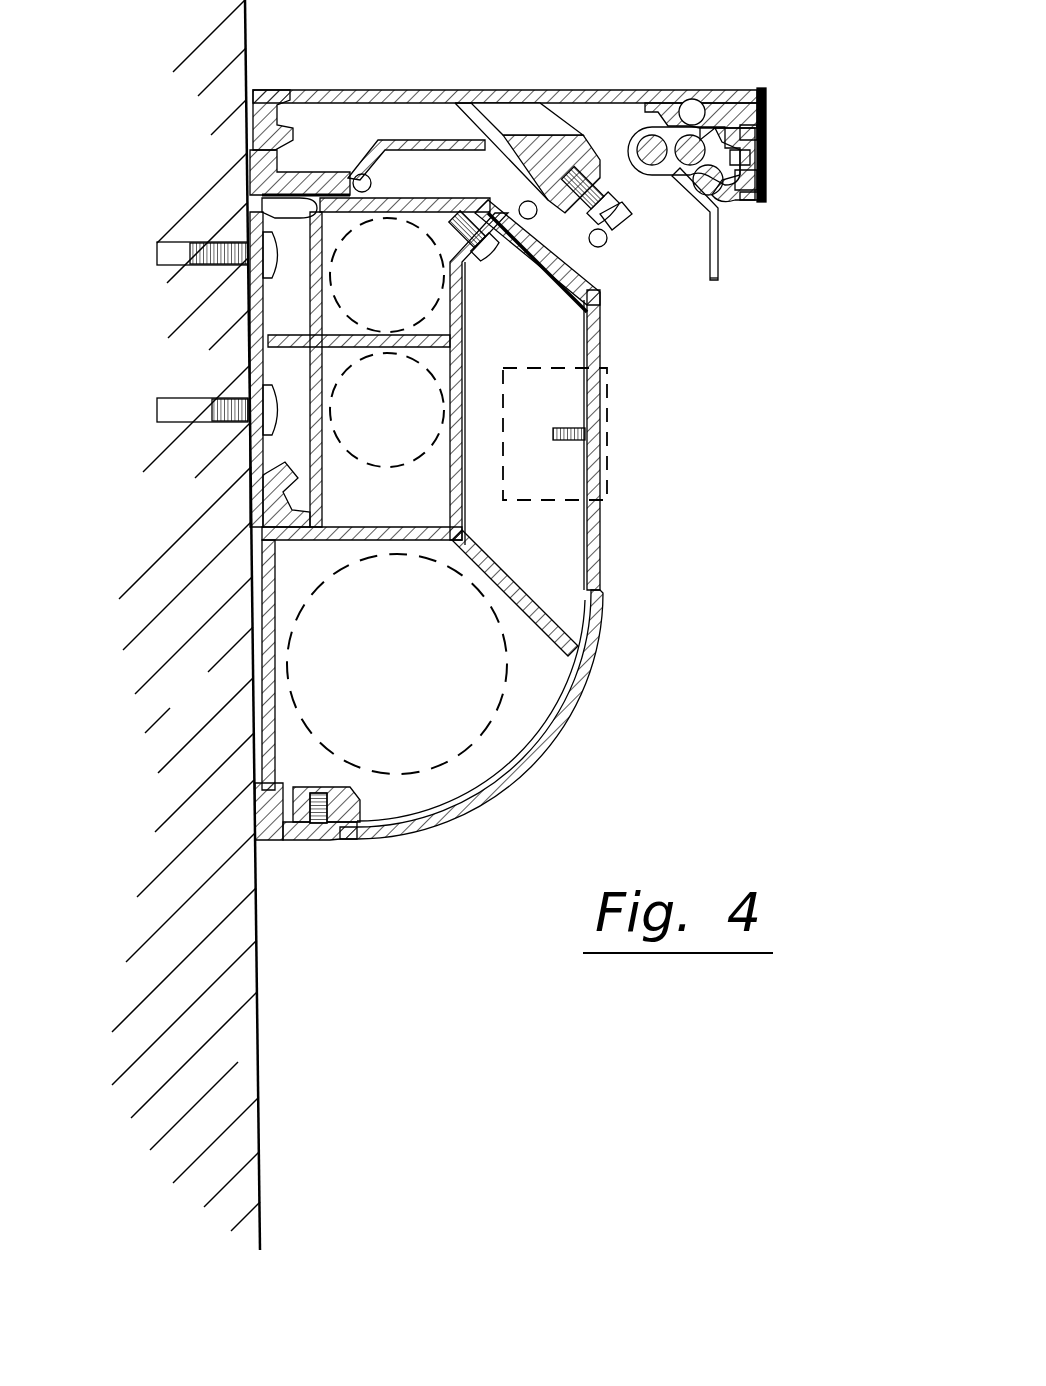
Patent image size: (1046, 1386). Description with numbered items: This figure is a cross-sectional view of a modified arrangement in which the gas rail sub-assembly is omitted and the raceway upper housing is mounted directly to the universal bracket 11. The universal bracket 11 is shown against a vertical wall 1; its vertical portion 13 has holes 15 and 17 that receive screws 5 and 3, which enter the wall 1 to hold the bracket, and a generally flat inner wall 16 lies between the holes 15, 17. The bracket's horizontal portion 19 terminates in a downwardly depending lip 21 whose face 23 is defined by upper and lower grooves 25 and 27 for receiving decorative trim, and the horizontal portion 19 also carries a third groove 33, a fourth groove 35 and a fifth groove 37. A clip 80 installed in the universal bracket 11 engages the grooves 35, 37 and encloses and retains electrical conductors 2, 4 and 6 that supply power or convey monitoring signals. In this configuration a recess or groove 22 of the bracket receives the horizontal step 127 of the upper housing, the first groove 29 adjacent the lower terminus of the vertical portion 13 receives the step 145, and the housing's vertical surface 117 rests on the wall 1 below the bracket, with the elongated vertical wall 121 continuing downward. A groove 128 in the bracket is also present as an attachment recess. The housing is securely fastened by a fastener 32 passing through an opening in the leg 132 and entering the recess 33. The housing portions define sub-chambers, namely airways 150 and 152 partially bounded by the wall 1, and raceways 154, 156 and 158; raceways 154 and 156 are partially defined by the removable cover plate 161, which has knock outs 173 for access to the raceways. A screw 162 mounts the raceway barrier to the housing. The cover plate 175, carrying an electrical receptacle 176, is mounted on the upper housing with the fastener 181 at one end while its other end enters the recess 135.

The wall 1 is at (165, 165).
The electrical conductor 2 is at (700, 205).
The screw 3 is at (163, 400).
The electrical conductor 4 is at (672, 184).
The screw 5 is at (175, 255).
The electrical conductor 6 is at (650, 152).
The universal bracket 11 is at (386, 90).
The vertical portion 13 is at (248, 310).
The hole 15 is at (240, 433).
The inner wall 16 is at (250, 337).
The hole 17 is at (243, 227).
The horizontal portion 19 is at (585, 90).
The lip 21 is at (740, 157).
The clip 22 is at (252, 193).
The face 23 is at (752, 183).
The upper groove 25 is at (768, 92).
The lower groove 27 is at (766, 200).
The first groove 29 is at (300, 488).
The fastener 32 is at (600, 238).
The third groove 33 is at (560, 185).
The fourth groove 35 is at (642, 90).
The fifth groove 37 is at (745, 130).
The clip 80 is at (722, 277).
The vertical surface 117 is at (265, 795).
The elongated vertical wall 121 is at (265, 705).
The horizontal step 127 is at (290, 195).
The groove 128 is at (252, 118).
The leg 132 is at (622, 205).
The groove 135 is at (567, 257).
The horizontal portion 145 is at (298, 478).
The airway 150 is at (280, 365).
The airway 152 is at (307, 317).
The raceway 154 is at (404, 296).
The raceway 156 is at (404, 422).
The raceway 158 is at (397, 672).
The removable cover plate 161 is at (463, 516).
The screw 162 is at (480, 263).
The knock out 173 is at (458, 432).
The cover plate 175 is at (605, 472).
The electrical receptacle 176 is at (610, 398).
The fastener 181 is at (338, 838).